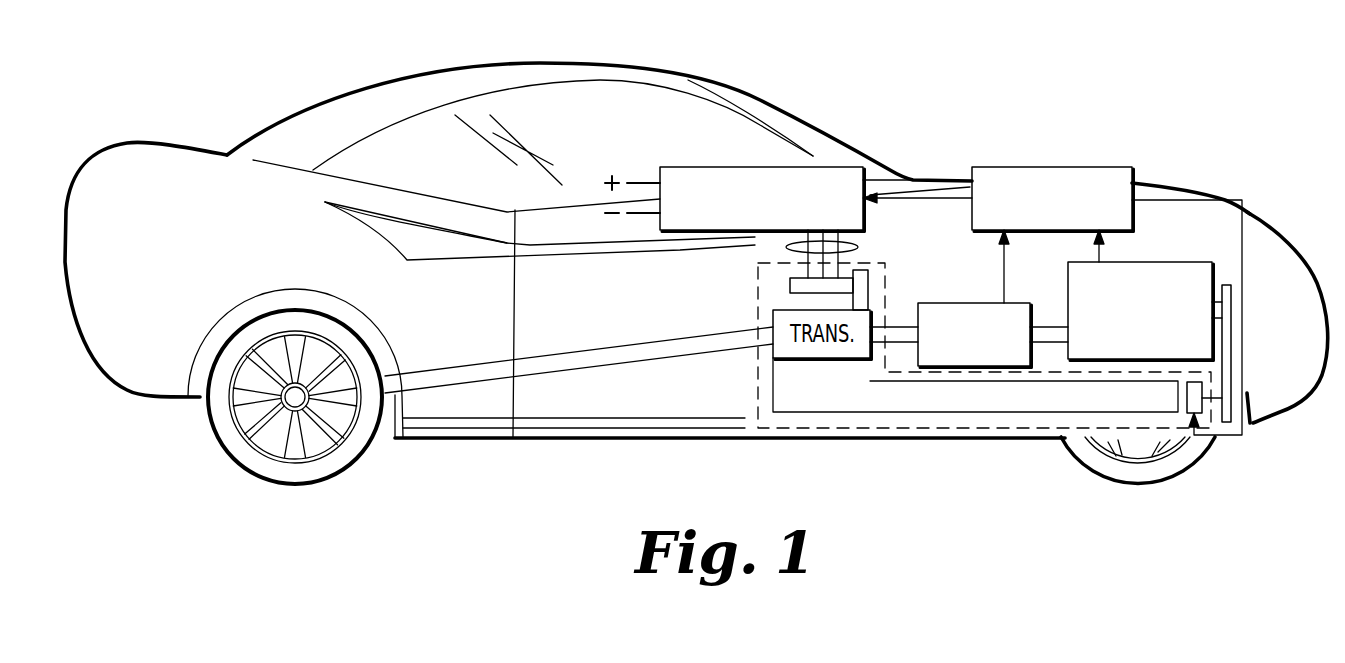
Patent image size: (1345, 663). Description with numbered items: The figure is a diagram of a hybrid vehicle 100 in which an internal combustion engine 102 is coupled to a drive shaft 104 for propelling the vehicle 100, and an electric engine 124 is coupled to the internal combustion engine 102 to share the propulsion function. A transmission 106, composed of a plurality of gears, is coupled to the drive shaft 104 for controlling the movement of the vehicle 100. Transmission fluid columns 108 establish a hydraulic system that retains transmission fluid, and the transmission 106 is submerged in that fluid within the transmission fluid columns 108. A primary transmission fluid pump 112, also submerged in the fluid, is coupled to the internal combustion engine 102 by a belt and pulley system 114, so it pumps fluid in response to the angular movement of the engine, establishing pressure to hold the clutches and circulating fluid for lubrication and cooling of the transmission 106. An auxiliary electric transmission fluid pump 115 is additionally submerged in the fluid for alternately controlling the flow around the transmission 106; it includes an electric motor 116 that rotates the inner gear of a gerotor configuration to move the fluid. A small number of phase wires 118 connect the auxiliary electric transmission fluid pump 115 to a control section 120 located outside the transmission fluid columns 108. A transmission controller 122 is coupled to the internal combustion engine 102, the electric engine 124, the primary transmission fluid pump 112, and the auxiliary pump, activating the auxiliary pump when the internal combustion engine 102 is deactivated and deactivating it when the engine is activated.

The vehicle 100 is at (657, 67).
The internal combustion engine 102 is at (1165, 262).
The drive shaft 104 is at (623, 347).
The transmission 106 is at (813, 359).
The transmission fluid columns 108 is at (758, 386).
The primary transmission fluid pump 112 is at (1187, 397).
The belt and pulley system 114 is at (1231, 357).
The auxiliary electric transmission fluid pump 115 is at (868, 270).
The electric motor 116 is at (790, 285).
The phase wires 118 is at (786, 248).
The control section 120 is at (660, 167).
The transmission controller 122 is at (1102, 167).
The electric engine 124 is at (972, 303).